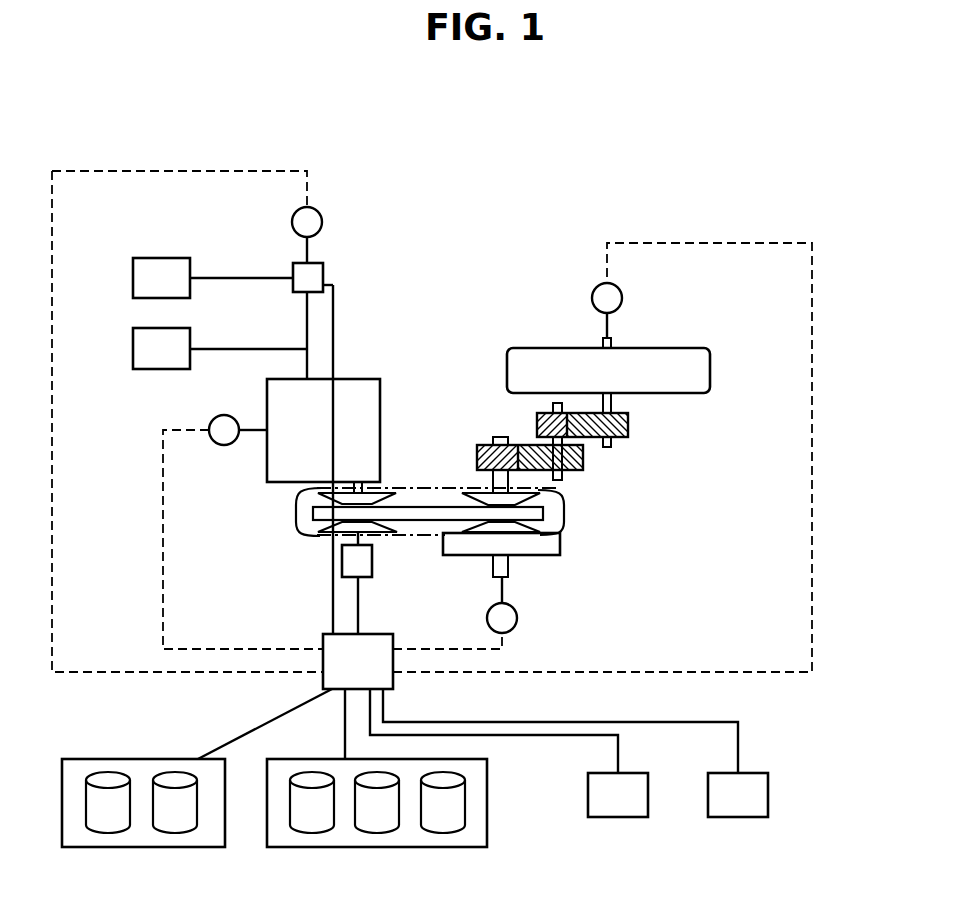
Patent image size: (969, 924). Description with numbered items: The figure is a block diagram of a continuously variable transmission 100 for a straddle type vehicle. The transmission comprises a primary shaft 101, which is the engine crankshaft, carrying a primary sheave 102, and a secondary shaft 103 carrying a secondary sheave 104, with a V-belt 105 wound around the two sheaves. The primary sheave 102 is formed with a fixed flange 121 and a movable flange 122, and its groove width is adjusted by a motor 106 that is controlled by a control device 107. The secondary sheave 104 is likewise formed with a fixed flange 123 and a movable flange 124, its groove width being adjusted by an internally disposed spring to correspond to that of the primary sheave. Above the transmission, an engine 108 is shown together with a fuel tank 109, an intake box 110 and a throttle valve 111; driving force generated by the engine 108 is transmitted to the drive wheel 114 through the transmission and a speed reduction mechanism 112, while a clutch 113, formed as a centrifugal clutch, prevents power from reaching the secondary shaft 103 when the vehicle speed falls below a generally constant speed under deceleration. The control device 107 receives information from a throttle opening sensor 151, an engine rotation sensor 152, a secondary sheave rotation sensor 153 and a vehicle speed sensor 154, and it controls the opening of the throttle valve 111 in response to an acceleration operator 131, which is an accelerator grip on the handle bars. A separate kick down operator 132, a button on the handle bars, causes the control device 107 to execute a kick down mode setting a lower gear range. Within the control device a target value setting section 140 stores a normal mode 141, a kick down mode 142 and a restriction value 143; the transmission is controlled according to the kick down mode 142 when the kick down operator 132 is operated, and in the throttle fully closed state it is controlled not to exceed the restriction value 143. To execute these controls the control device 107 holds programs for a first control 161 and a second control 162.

The continuously variable transmission 100 is at (310, 550).
The primary shaft 101 is at (371, 488).
The primary sheave 102 is at (318, 500).
The secondary shaft 103 is at (494, 488).
The secondary sheave 104 is at (558, 522).
The V-belt 105 is at (437, 507).
The motor 106 is at (373, 562).
The control device 107 is at (393, 637).
The engine 108 is at (363, 378).
The fuel tank 109 is at (150, 258).
The intake box 110 is at (133, 340).
The throttle valve 111 is at (326, 272).
The speed reduction mechanism 112 is at (652, 439).
The clutch 113 is at (525, 558).
The drive wheel 114 is at (684, 352).
The fixed flange 121 is at (396, 494).
The movable flange 122 is at (316, 529).
The fixed flange 123 is at (547, 498).
The movable flange 124 is at (560, 531).
The acceleration operator 131 is at (619, 808).
The kick down operator 132 is at (737, 808).
The target value setting section 140 is at (473, 847).
The normal mode 141 is at (305, 832).
The kick down mode 142 is at (370, 832).
The restriction value 143 is at (437, 832).
The throttle opening sensor 151 is at (320, 212).
The engine rotation sensor 152 is at (211, 422).
The secondary sheave rotation sensor 153 is at (516, 626).
The vehicle speed sensor 154 is at (593, 290).
The first control 161 is at (101, 832).
The second control 162 is at (168, 832).